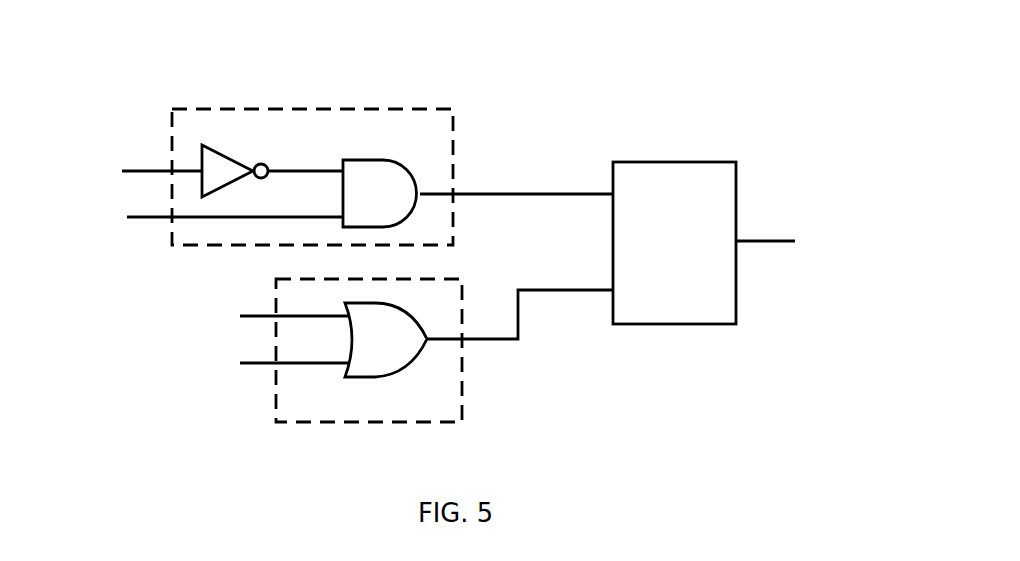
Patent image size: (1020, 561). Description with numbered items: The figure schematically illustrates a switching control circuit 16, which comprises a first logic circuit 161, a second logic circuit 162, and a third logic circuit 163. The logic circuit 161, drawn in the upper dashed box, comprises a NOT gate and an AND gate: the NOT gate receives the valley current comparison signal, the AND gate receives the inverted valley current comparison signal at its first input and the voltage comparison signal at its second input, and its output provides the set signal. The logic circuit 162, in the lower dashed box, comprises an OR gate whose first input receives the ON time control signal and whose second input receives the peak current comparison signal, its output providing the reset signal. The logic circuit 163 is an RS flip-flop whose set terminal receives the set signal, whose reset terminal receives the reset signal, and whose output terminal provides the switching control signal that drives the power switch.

The switching control circuit 16 is at (598, 95).
The logic circuit 161 is at (362, 110).
The logic circuit 162 is at (462, 299).
The logic circuit 163 is at (680, 162).